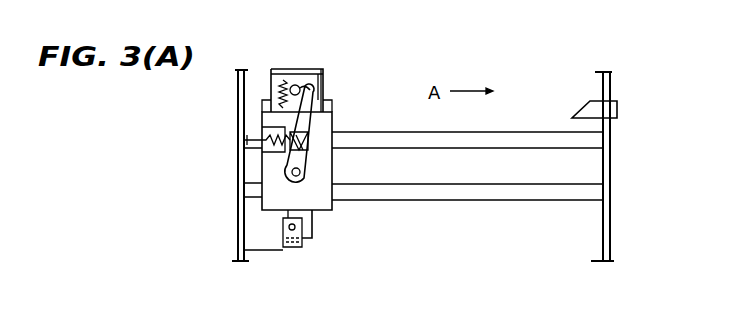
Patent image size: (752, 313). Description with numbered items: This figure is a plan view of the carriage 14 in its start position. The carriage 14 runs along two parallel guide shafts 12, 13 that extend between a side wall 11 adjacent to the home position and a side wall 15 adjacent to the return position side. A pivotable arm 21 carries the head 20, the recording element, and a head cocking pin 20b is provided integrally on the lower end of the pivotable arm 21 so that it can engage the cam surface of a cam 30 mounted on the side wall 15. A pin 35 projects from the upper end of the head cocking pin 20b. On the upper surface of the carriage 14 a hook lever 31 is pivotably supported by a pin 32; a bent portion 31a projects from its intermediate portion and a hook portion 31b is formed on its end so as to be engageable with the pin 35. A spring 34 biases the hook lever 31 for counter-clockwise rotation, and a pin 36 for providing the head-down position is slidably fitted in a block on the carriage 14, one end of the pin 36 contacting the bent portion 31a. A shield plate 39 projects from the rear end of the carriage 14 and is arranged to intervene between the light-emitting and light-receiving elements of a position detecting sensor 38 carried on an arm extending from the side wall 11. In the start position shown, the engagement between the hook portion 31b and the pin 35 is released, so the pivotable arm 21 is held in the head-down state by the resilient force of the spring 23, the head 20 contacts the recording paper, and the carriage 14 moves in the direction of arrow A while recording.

The side wall 11 is at (238, 108).
The guide shaft 12 is at (488, 186).
The guide shaft 13 is at (503, 132).
The carriage 14 is at (316, 204).
The side wall 15 is at (611, 79).
The head 20 is at (316, 76).
The head cocking pin 20b is at (320, 92).
The pivotable arm 21 is at (272, 82).
The spring 23 is at (283, 79).
The cam 30 is at (618, 110).
The hook lever 31 is at (302, 180).
The bent portion 31a is at (320, 130).
The hook portion 31b is at (312, 96).
The pin 32 is at (302, 182).
The spring 34 is at (310, 124).
The pin 35 is at (298, 85).
The pin 36 is at (250, 140).
The position detecting sensor 38 is at (292, 248).
The shield plate 39 is at (313, 230).